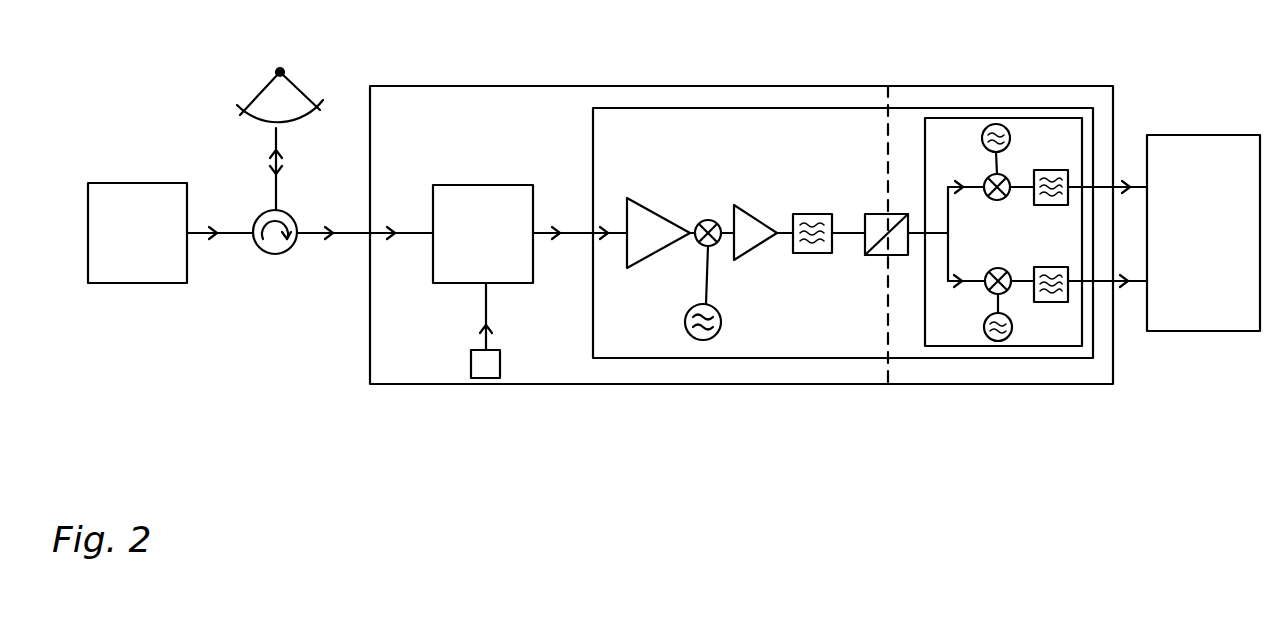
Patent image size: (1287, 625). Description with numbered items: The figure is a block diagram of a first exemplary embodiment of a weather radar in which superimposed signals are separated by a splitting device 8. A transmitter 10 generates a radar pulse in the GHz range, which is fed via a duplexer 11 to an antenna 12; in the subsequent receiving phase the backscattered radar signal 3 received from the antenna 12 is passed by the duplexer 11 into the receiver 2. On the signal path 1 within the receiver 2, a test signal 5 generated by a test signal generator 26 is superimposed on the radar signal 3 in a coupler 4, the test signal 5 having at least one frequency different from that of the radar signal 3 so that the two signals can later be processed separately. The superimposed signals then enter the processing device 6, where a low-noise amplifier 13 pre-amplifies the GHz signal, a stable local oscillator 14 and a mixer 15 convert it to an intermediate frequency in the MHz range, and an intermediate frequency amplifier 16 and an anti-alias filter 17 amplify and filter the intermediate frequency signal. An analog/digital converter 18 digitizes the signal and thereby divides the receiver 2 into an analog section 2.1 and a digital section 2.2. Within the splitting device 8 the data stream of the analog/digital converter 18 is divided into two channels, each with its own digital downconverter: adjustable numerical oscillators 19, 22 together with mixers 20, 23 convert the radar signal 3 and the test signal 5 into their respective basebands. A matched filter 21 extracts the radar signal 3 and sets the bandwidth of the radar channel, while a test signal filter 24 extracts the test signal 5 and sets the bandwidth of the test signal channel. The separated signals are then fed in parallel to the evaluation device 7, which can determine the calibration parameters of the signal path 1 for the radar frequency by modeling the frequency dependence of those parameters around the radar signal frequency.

The signal path 1 is at (405, 228).
The receiver 2 is at (410, 386).
The analog section 2.1 is at (836, 372).
The digital section 2.2 is at (918, 372).
The radar signal 3 is at (318, 236).
The coupler 4 is at (490, 185).
The test signal 5 is at (490, 338).
The processing device 6 is at (620, 360).
The evaluation device 7 is at (1187, 332).
The splitting device 8 is at (941, 348).
The transmitter 10 is at (118, 285).
The duplexer 11 is at (263, 254).
The antenna 12 is at (290, 82).
The low-noise amplifier 13 is at (641, 200).
The stable local oscillator 14 is at (721, 321).
The mixer 15 is at (706, 220).
The intermediate frequency amplifier 16 is at (756, 211).
The anti-alias filter 17 is at (808, 215).
The analog/digital converter 18 is at (876, 256).
The numerical oscillator 19 is at (994, 125).
The mixer 20 is at (986, 175).
The matched filter 21 is at (1046, 170).
The numerical oscillator 22 is at (1010, 341).
The mixer 23 is at (1005, 292).
The test signal filter 24 is at (1056, 303).
The test signal generator 26 is at (481, 379).